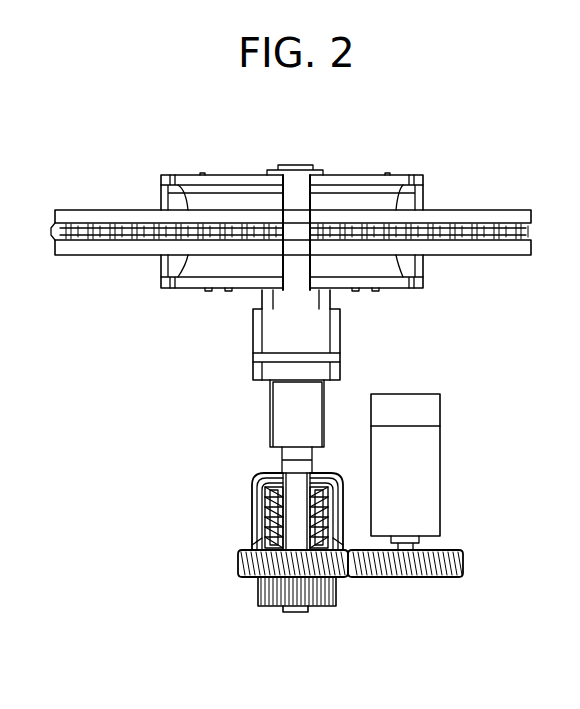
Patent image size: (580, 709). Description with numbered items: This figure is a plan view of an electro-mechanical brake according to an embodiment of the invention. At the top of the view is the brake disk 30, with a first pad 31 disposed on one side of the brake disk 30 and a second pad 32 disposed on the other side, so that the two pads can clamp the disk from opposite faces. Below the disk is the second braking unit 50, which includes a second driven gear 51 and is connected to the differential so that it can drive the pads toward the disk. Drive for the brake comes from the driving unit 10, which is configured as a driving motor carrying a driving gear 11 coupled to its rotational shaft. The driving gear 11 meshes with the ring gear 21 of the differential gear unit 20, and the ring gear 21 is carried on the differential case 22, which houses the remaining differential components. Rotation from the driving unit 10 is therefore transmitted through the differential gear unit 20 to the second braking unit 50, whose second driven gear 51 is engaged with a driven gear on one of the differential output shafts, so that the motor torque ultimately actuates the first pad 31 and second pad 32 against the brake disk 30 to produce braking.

The driving unit 10 is at (418, 478).
The driving gear 11 is at (430, 580).
The differential gear unit 20 is at (250, 464).
The ring gear 21 is at (238, 564).
The differential case 22 is at (257, 518).
The brake disk 30 is at (482, 215).
The first pad 31 is at (207, 265).
The second pad 32 is at (365, 196).
The second braking unit 50 is at (347, 350).
The second driven gear 51 is at (272, 595).